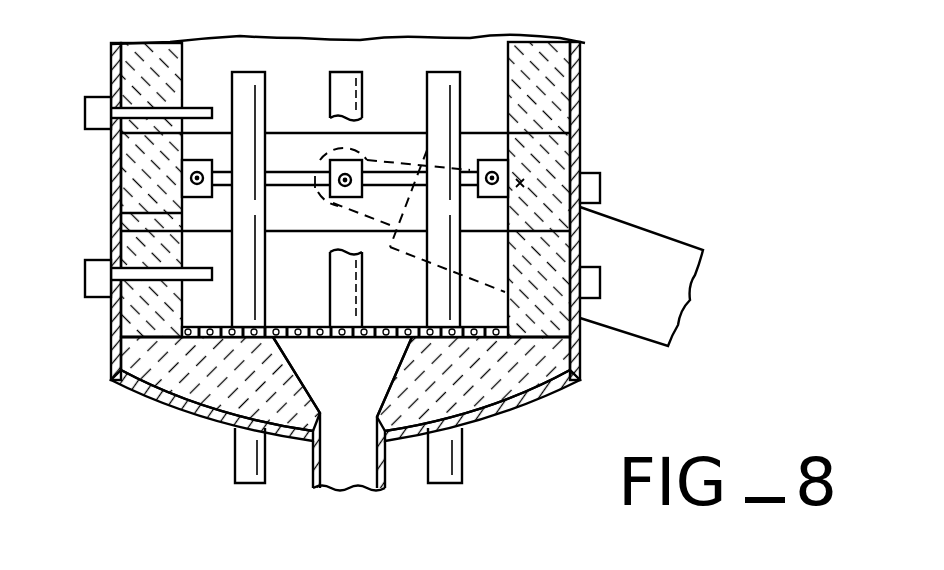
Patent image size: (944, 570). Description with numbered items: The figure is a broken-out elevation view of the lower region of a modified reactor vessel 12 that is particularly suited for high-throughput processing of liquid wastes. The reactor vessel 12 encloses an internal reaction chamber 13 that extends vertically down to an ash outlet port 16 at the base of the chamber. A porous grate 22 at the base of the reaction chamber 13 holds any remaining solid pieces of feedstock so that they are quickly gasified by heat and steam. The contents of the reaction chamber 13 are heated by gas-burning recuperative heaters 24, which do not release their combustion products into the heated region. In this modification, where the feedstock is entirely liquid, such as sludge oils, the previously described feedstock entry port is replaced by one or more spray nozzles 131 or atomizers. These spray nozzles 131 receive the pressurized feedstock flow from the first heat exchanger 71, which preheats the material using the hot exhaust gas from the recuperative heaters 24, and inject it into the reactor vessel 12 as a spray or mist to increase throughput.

The reactor vessel 12 is at (600, 362).
The reaction chamber 13 is at (510, 68).
The spray nozzles 131 is at (323, 162).
The heaters 24 is at (247, 72).
The grate 22 is at (300, 325).
The ash outlet port 16 is at (297, 373).
The first heat exchanger 71 is at (653, 232).